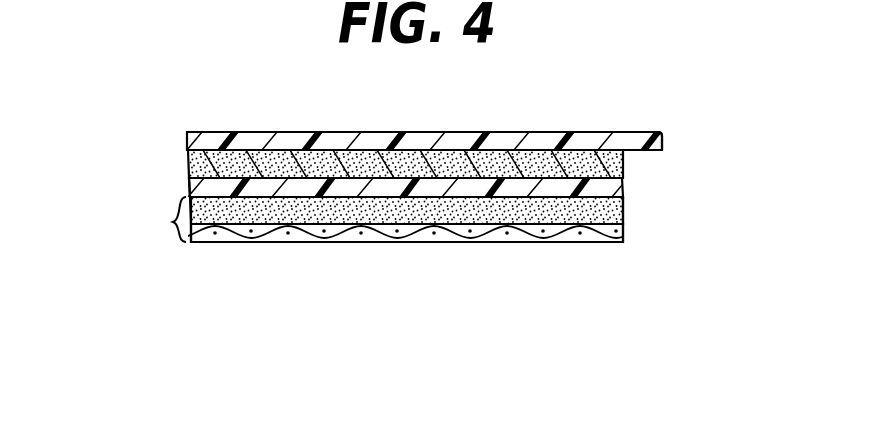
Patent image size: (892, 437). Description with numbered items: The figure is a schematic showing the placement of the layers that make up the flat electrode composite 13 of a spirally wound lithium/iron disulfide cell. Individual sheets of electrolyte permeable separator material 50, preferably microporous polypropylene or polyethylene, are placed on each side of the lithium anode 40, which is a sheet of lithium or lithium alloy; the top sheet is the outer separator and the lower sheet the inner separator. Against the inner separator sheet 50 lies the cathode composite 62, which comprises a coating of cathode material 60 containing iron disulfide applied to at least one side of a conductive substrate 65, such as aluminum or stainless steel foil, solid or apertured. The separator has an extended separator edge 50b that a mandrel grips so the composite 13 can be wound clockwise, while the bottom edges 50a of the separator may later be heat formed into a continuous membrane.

The flat electrode composite 13 is at (210, 107).
The separator sheet 50 is at (595, 138).
The bottom edges of separator 50a is at (187, 185).
The extended separator edge 50b is at (664, 138).
The lithium anode 40 is at (624, 166).
The cathode material 60 is at (621, 210).
The cathode composite 62 is at (173, 222).
The substrate 65 is at (557, 237).